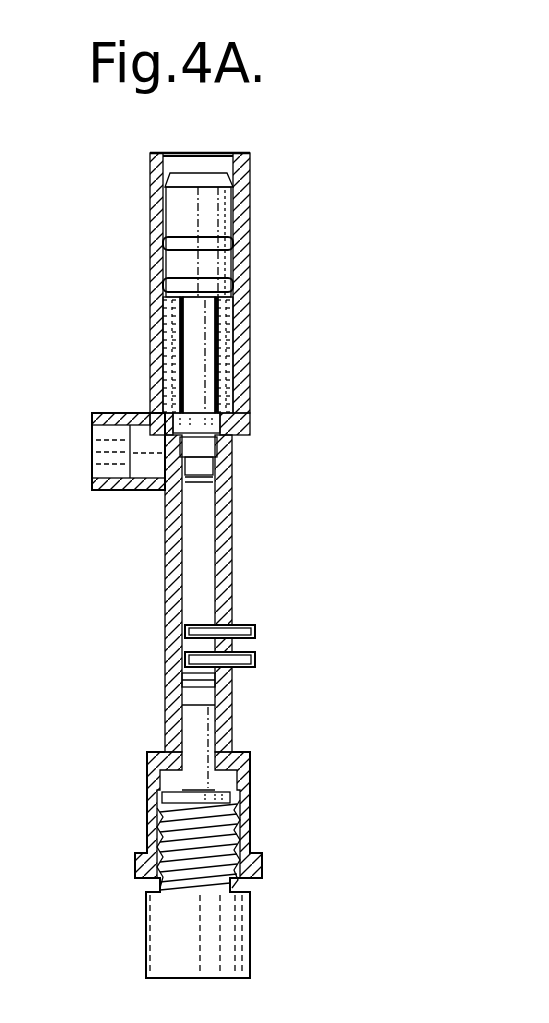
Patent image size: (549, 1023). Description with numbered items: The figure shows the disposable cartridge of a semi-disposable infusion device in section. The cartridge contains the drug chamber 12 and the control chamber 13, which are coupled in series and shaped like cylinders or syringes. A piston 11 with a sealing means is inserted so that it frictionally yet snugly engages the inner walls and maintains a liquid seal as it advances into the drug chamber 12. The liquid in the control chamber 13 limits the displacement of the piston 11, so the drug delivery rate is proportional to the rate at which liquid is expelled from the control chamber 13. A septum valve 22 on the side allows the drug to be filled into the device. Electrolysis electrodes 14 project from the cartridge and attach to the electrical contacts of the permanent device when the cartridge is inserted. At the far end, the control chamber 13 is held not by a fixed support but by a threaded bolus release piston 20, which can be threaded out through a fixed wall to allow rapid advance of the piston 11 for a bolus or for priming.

The piston 11 is at (202, 360).
The drug chamber 12 is at (173, 342).
The control chamber 13 is at (200, 540).
The electrolysis electrodes 14 is at (248, 653).
The bolus release piston 20 is at (197, 742).
The septum valve 22 is at (105, 443).